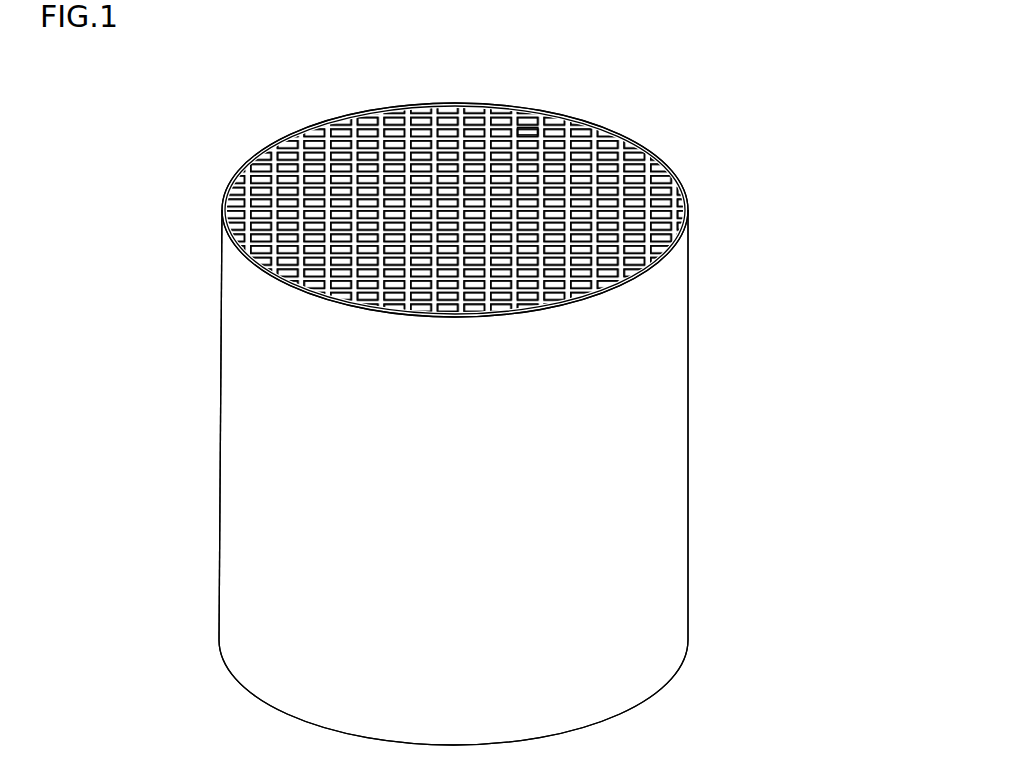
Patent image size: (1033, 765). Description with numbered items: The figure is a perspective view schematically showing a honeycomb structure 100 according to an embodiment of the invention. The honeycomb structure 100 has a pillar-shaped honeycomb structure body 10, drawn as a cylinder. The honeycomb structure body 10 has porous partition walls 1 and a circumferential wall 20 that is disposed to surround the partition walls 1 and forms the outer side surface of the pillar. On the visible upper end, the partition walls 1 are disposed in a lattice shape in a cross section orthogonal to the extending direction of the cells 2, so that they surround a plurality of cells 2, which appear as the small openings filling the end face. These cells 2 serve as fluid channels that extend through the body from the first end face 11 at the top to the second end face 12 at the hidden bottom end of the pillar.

The honeycomb structure 100 is at (743, 81).
The honeycomb structure body 10 is at (666, 327).
The partition walls 1 is at (433, 138).
The cells 2 is at (523, 130).
The first end face 11 is at (330, 119).
The circumferential wall 20 is at (638, 477).
The second end face 12 is at (590, 725).